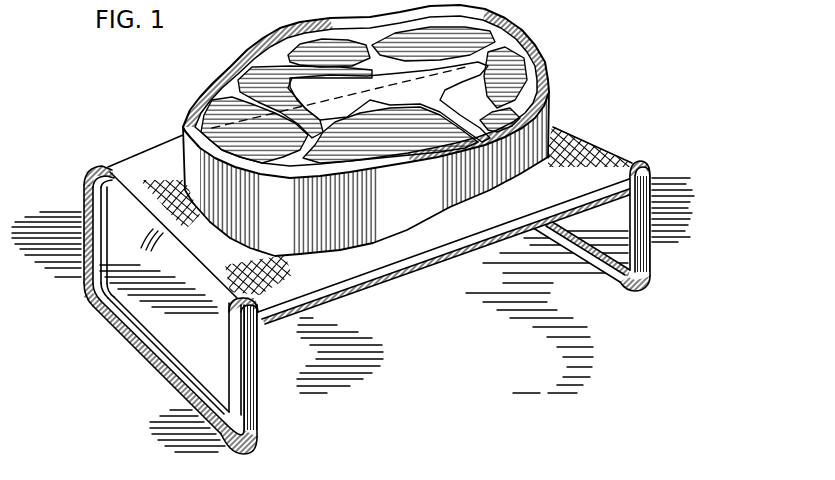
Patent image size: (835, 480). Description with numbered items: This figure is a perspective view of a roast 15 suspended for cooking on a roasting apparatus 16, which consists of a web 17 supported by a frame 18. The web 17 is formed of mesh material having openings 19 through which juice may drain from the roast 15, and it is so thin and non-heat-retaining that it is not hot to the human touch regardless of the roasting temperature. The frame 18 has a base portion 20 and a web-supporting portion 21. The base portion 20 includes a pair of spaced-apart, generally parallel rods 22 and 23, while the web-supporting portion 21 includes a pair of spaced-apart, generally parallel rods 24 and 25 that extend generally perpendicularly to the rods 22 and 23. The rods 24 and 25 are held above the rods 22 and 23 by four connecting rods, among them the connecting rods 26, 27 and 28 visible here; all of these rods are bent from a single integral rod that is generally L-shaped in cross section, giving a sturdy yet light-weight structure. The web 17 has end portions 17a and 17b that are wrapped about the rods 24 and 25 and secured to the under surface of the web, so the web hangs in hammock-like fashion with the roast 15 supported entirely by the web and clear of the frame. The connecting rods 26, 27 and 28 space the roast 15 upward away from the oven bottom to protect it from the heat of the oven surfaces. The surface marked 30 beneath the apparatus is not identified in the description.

The roast 15 is at (518, 108).
The roasting apparatus 16 is at (654, 189).
The web 17 is at (482, 236).
The end portion 17a is at (229, 303).
The end portion 17b is at (120, 184).
The frame 18 is at (254, 372).
The openings 19 is at (148, 250).
The base portion 20 is at (122, 340).
The web-supporting portion 21 is at (95, 182).
The rod 22 is at (163, 383).
The rod 23 is at (566, 262).
The rod 24 is at (640, 160).
The rod 25 is at (104, 165).
The connecting rod 26 is at (82, 258).
The connecting rod 27 is at (254, 412).
The connecting rod 28 is at (654, 240).
The supporting surface 30 is at (353, 329).